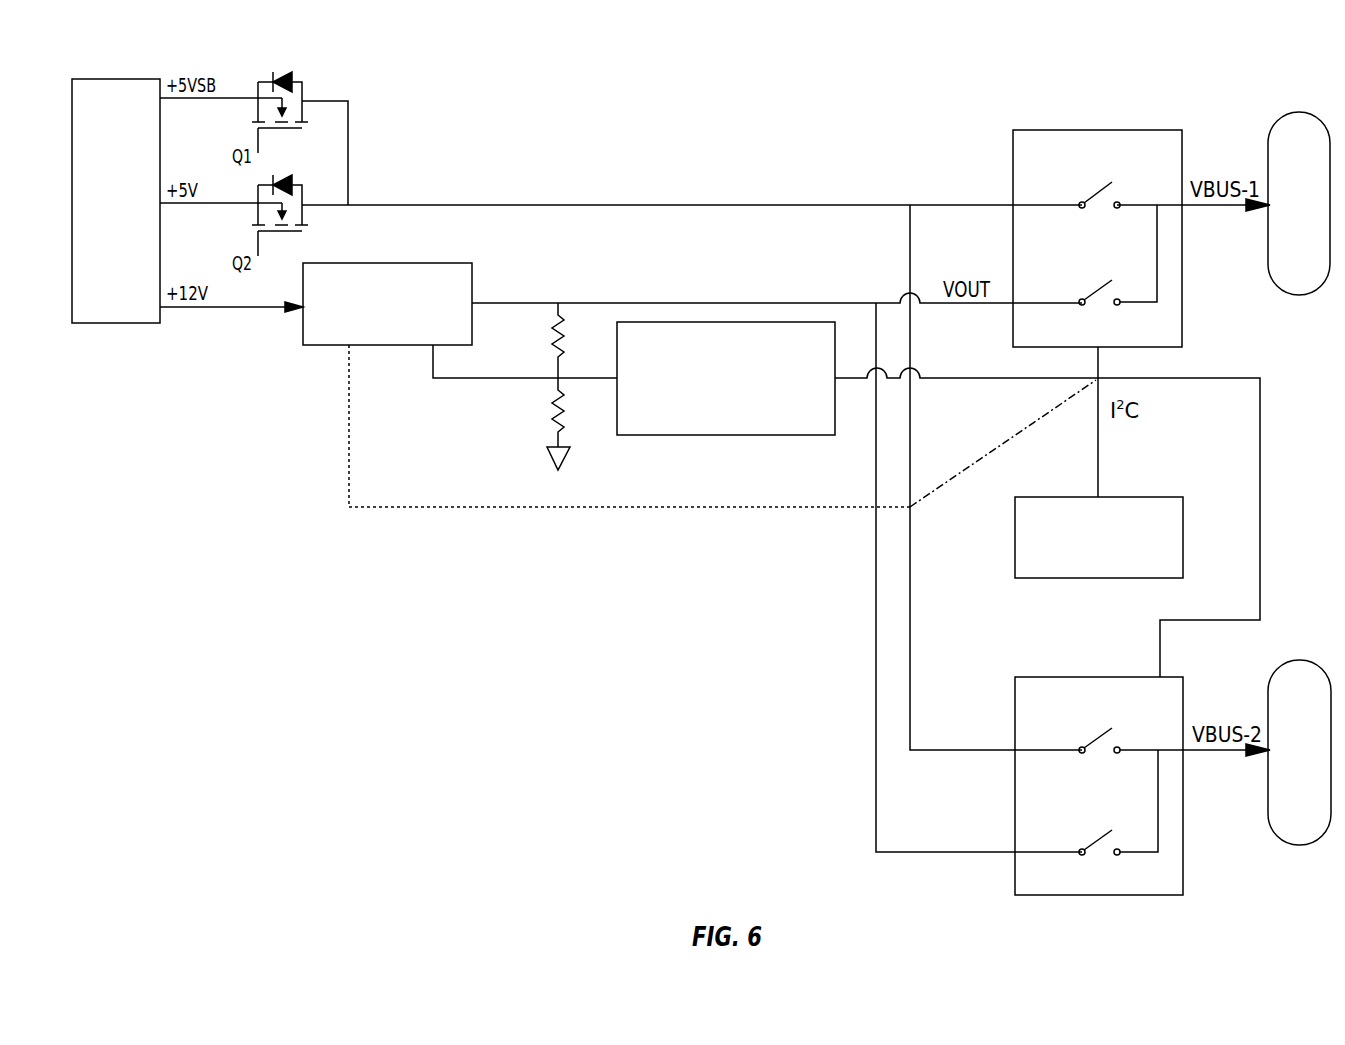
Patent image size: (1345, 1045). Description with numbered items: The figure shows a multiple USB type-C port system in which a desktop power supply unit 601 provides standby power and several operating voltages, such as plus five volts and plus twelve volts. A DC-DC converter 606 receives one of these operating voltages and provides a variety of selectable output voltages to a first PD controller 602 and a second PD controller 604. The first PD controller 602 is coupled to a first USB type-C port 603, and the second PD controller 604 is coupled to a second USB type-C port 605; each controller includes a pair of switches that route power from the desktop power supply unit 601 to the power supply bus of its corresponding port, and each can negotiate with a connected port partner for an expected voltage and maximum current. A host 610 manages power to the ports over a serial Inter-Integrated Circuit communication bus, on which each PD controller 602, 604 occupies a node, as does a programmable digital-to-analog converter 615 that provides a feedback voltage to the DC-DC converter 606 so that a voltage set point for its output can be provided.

The desktop power supply unit 601 is at (117, 78).
The first PD controller 602 is at (1100, 130).
The first USB type-C port 603 is at (1300, 112).
The second PD controller 604 is at (1185, 697).
The second USB type-C port 605 is at (1300, 660).
The DC-DC converter 606 is at (390, 263).
The host 610 is at (1184, 513).
The programmable digital-to-analog converter 615 is at (725, 437).